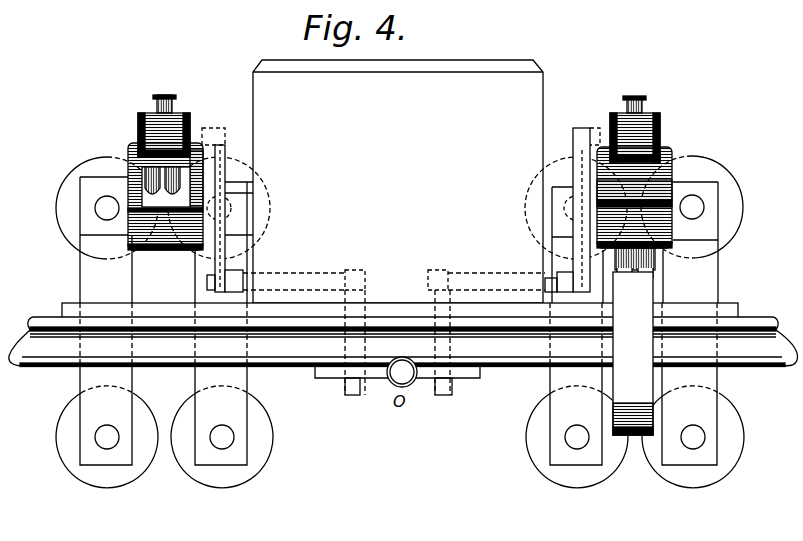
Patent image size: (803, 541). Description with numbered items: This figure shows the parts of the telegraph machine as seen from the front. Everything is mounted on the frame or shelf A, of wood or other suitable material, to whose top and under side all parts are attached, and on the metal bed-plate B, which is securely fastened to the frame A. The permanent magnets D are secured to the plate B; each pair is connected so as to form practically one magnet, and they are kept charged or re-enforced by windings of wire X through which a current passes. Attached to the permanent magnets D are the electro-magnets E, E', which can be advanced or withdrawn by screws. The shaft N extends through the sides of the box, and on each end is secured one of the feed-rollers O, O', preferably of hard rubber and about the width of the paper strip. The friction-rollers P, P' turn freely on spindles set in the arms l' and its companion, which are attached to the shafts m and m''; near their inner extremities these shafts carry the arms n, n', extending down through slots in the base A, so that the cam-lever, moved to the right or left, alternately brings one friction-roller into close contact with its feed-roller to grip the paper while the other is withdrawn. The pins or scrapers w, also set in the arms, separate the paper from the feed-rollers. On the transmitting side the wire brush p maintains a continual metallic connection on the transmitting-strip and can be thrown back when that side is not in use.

The friction-roller P' is at (168, 121).
The friction-roller P is at (641, 124).
The electro-magnet E' is at (324, 208).
The electro-magnet E is at (700, 207).
The pin or scraper w is at (407, 187).
The shaft N is at (401, 210).
The arm l' is at (401, 220).
The feed-roller O' is at (165, 206).
The feed-roller O is at (642, 205).
The permanent magnet D is at (399, 241).
The left connecting rod m'' is at (304, 273).
The shaft m is at (486, 273).
The bed-plate B is at (400, 312).
The frame or shelf A is at (403, 342).
The arm n' is at (343, 342).
The arm n is at (451, 342).
The wire brush p is at (634, 341).
The winding of wire X is at (50, 438).